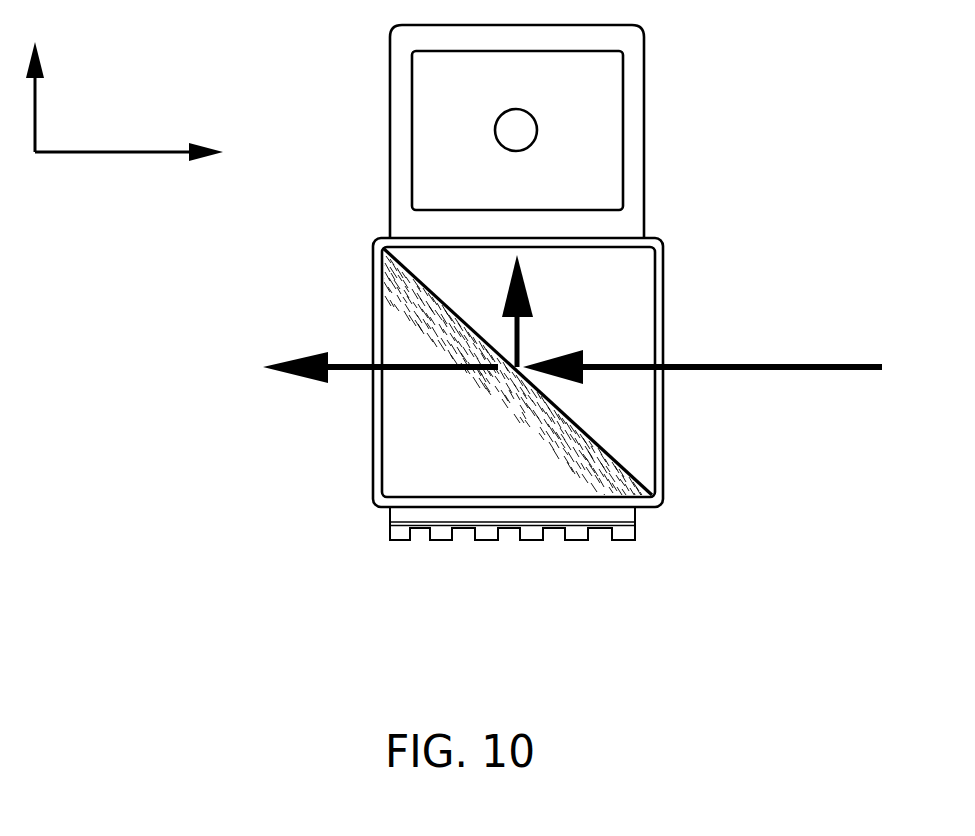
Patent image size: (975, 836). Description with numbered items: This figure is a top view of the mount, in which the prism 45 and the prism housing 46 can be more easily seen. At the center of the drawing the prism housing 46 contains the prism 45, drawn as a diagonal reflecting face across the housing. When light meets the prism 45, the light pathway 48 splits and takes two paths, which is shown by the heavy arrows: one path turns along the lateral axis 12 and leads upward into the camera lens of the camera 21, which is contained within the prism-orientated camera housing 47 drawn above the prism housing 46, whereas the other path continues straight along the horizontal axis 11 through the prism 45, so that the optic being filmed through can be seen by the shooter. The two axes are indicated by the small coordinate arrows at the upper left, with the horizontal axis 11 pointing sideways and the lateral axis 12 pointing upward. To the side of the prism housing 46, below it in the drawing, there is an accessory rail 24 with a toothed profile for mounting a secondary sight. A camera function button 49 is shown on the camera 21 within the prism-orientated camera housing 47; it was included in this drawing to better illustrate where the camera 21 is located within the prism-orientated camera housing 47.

The horizontal axis 11 is at (148, 152).
The lateral axis 12 is at (39, 82).
The camera 21 is at (608, 115).
The accessory rail 24 is at (522, 532).
The prism 45 is at (403, 300).
The prism housing 46 is at (658, 467).
The prism-orientated camera housing 47 is at (643, 133).
The light pathway 48 is at (528, 293).
The camera function button 49 is at (497, 122).